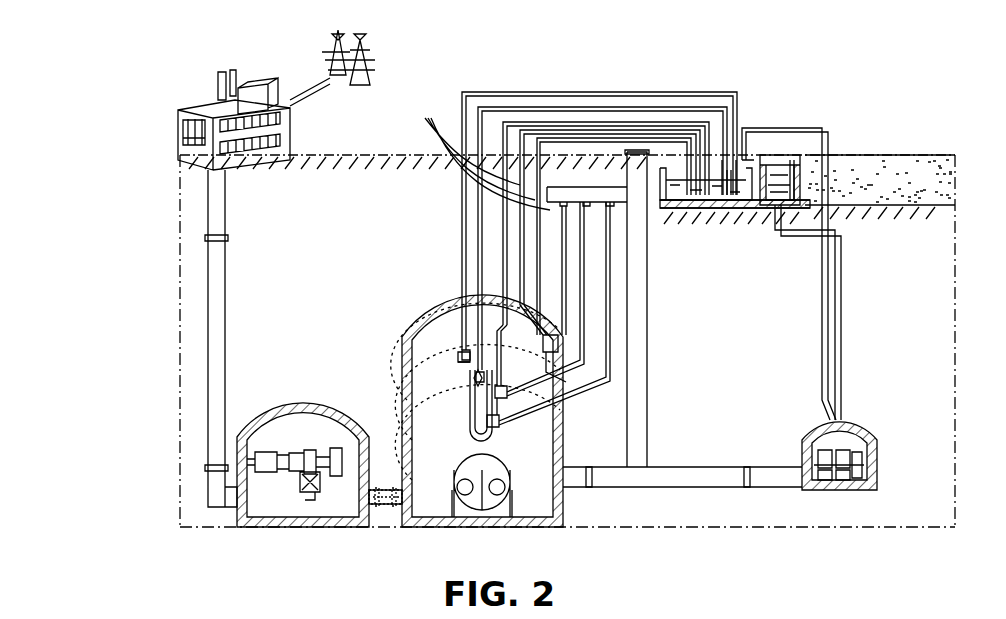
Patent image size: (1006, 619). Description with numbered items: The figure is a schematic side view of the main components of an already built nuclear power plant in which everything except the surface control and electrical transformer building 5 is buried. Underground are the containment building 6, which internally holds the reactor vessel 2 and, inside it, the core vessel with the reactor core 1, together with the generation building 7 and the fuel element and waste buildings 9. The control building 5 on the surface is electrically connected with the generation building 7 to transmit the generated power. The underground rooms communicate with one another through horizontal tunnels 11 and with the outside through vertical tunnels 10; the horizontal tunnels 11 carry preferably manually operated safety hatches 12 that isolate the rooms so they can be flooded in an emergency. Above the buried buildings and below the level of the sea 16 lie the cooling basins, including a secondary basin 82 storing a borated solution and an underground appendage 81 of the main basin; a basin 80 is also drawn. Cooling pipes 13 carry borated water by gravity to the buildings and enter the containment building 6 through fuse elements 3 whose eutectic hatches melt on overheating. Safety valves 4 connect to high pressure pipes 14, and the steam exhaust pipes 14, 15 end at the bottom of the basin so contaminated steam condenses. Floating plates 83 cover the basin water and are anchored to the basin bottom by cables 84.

The reactor core 1 is at (468, 380).
The reactor vessel 2 is at (468, 440).
The fuse element 3 is at (572, 400).
The safety valves 4 is at (476, 372).
The control and electrical transformer building 5 is at (207, 105).
The containment building 6 is at (438, 302).
The generation building 7 is at (283, 412).
The fuel element and waste buildings 9 is at (850, 425).
The vertical tunnels 10 is at (210, 290).
The horizontal tunnels 11 is at (693, 487).
The safety hatches 12 is at (210, 467).
The cooling pipes 13 is at (842, 322).
The high pressure pipes 14 is at (478, 234).
The steam exhaust pipes 15 is at (554, 217).
The sea 16 is at (876, 155).
The basin 80 is at (668, 182).
The underground appendage 81 is at (560, 200).
The secondary basin 82 is at (778, 165).
The floating plates 83 is at (744, 162).
The cables 84 is at (792, 160).